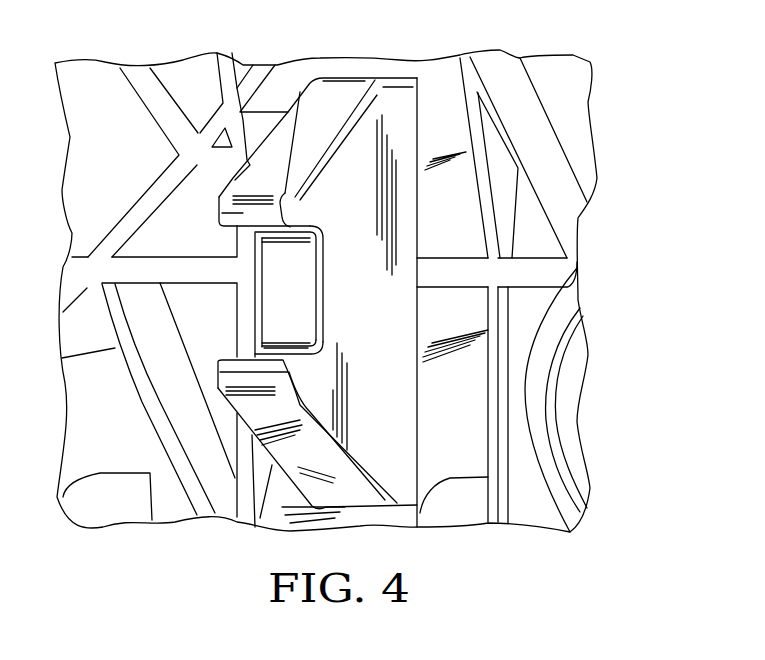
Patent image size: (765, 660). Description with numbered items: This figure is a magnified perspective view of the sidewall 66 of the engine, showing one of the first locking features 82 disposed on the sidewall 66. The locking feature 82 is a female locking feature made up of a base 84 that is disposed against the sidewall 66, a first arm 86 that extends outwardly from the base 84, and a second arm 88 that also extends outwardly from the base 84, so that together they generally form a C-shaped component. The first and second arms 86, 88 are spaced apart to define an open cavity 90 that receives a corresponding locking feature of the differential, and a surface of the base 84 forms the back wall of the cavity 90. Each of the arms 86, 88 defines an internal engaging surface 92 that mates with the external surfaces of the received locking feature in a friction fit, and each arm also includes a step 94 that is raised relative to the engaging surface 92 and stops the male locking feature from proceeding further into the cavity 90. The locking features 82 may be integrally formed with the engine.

The sidewall 66 is at (469, 400).
The first locking feature 82 is at (389, 336).
The base 84 is at (407, 145).
The first arm 86 is at (225, 225).
The second arm 88 is at (227, 387).
The open cavity 90 is at (223, 307).
The internal engaging surface 92 is at (298, 222).
The step 94 is at (287, 350).